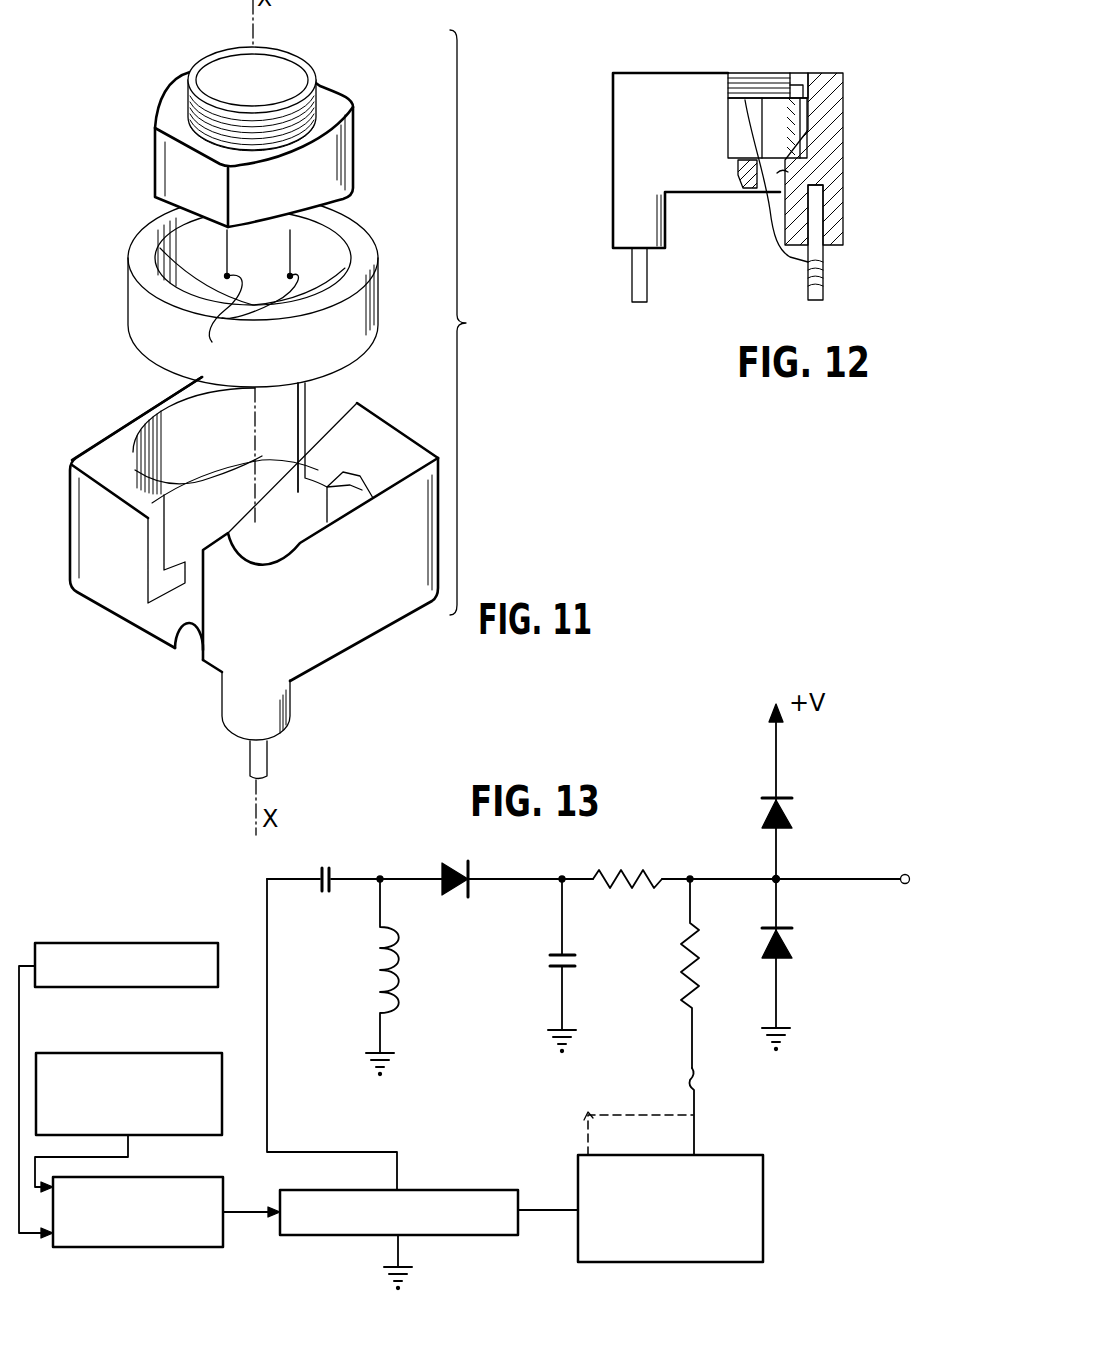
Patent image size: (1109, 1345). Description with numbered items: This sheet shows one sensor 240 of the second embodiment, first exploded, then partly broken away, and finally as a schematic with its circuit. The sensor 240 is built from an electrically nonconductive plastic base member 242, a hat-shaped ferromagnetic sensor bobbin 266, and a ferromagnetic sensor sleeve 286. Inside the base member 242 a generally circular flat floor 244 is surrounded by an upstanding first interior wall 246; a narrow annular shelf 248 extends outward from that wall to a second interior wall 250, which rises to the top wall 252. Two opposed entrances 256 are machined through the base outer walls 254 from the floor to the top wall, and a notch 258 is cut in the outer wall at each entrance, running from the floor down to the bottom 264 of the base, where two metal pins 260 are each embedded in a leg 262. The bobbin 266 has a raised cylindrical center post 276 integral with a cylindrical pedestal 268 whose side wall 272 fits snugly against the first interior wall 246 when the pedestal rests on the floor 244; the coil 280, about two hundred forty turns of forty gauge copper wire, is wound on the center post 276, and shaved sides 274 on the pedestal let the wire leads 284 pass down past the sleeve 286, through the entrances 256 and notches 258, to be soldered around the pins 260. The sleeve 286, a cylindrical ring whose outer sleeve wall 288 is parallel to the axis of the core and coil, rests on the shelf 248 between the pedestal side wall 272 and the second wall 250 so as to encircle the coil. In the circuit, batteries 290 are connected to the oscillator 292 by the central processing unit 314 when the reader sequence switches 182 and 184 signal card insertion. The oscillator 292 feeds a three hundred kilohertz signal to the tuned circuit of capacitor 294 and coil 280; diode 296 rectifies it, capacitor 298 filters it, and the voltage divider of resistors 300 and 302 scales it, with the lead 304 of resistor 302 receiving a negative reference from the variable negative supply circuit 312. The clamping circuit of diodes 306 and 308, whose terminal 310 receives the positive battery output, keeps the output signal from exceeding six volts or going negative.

In FIG. 13, the reader sequence switch 182 is at (95, 1053).
In FIG. 13, the reader sequence switch 184 is at (191, 1031).
In FIG. 12, the sensor 240 is at (714, 190).
In FIG. 11, the base member 242 is at (250, 574).
In FIG. 12, the base member 242 is at (620, 178).
In FIG. 11, the floor 244 is at (194, 462).
In FIG. 11, the first interior wall 246 is at (218, 482).
In FIG. 11, the annular shelf 248 is at (165, 488).
In FIG. 11, the second interior wall 250 is at (163, 413).
In FIG. 11, the top wall 252 is at (279, 552).
In FIG. 11, the base outer wall 254 is at (108, 592).
In FIG. 11, the entrance 256 is at (155, 542).
In FIG. 12, the entrance 256 is at (735, 138).
In FIG. 11, the notch 258 is at (190, 650).
In FIG. 12, the notch 258 is at (788, 172).
In FIG. 11, the metal pin 260 is at (249, 757).
In FIG. 12, the metal pin 260 is at (808, 293).
In FIG. 11, the leg 262 is at (292, 702).
In FIG. 12, the leg 262 is at (838, 218).
In FIG. 12, the bottom 264 is at (688, 195).
In FIG. 11, the sensor bobbin 266 is at (235, 123).
In FIG. 11, the pedestal 268 is at (140, 87).
In FIG. 11, the pedestal side wall 272 is at (160, 175).
In FIG. 12, the pedestal side wall 272 is at (840, 130).
In FIG. 11, the shaved side 274 is at (212, 207).
In FIG. 12, the shaved side 274 is at (733, 103).
In FIG. 11, the center post 276 is at (275, 63).
In FIG. 11, the coil 280 is at (340, 97).
In FIG. 12, the coil 280 is at (790, 73).
In FIG. 13, the coil 280 is at (374, 990).
In FIG. 11, the wire lead 284 is at (253, 298).
In FIG. 12, the wire lead 284 is at (770, 228).
In FIG. 11, the sensor sleeve 286 is at (213, 291).
In FIG. 12, the sensor sleeve 286 is at (816, 190).
In FIG. 11, the outer sleeve wall 288 is at (142, 303).
In FIG. 13, the batteries 290 is at (63, 943).
In FIG. 13, the oscillator 292 is at (448, 1190).
In FIG. 13, the capacitor 294 is at (318, 888).
In FIG. 13, the diode 296 is at (452, 895).
In FIG. 13, the capacitor 298 is at (557, 968).
In FIG. 13, the resistor 300 is at (594, 884).
In FIG. 13, the resistor 302 is at (686, 985).
In FIG. 13, the lead 304 is at (688, 1076).
In FIG. 13, the diode 306 is at (795, 944).
In FIG. 13, the diode 308 is at (793, 823).
In FIG. 13, the terminal 310 is at (778, 777).
In FIG. 13, the variable negative supply circuit 312 is at (763, 1188).
In FIG. 13, the central processing unit 314 is at (145, 1177).